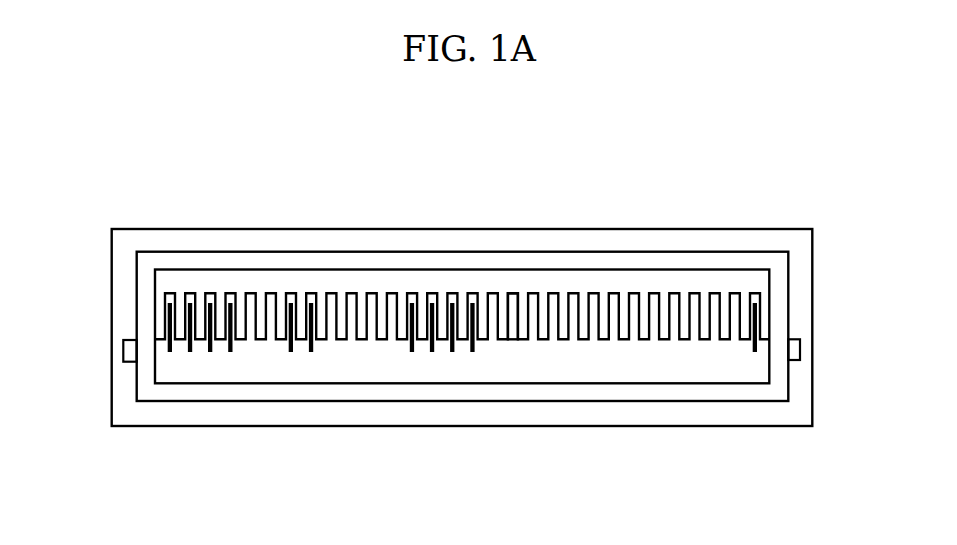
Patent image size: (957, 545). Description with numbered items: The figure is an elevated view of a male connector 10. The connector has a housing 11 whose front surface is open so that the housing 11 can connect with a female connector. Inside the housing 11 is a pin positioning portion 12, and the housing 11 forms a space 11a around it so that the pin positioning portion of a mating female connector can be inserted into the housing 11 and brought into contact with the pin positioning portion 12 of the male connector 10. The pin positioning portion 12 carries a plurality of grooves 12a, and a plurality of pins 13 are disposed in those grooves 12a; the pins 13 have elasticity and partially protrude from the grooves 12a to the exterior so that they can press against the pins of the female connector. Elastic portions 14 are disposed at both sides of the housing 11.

The male connector 10 is at (103, 174).
The housing 11 is at (673, 262).
The space 11a is at (620, 363).
The pin positioning portion 12 is at (525, 282).
The grooves 12a is at (513, 320).
The pins 13 is at (230, 353).
The elastic portions 14 is at (123, 357).